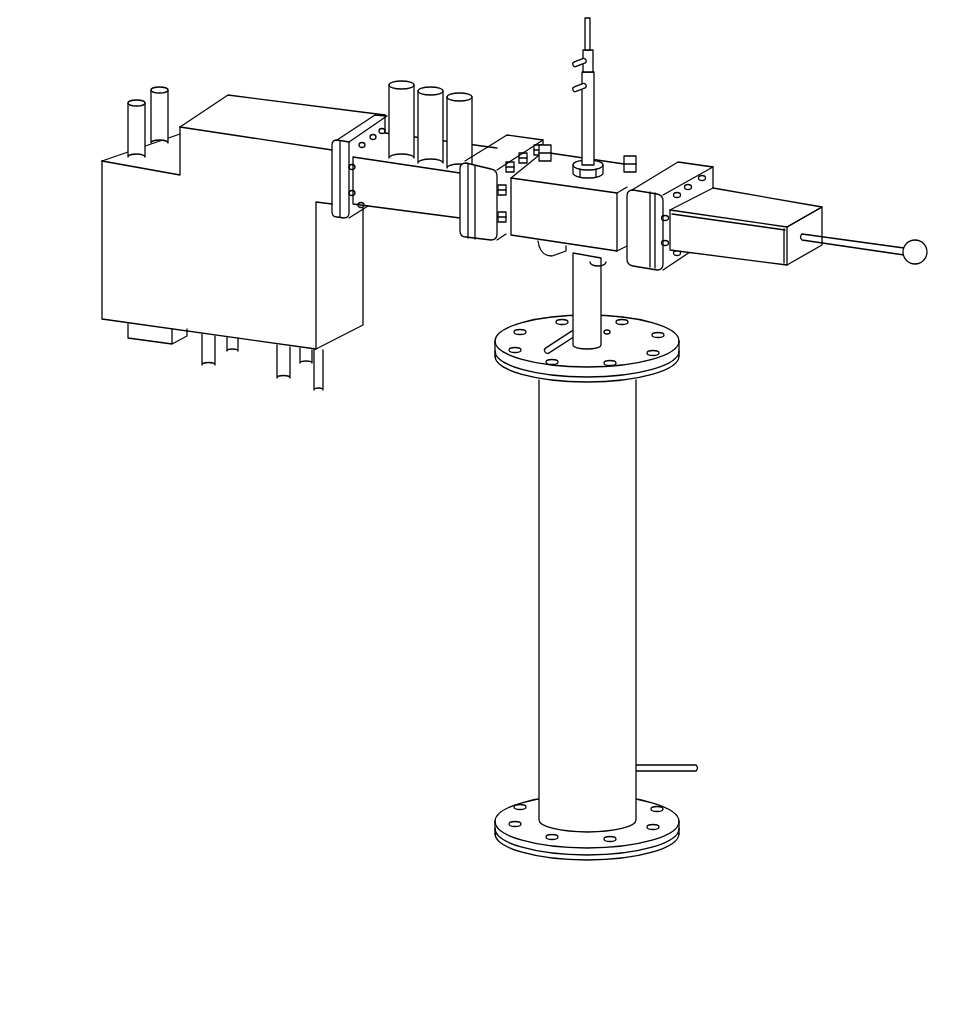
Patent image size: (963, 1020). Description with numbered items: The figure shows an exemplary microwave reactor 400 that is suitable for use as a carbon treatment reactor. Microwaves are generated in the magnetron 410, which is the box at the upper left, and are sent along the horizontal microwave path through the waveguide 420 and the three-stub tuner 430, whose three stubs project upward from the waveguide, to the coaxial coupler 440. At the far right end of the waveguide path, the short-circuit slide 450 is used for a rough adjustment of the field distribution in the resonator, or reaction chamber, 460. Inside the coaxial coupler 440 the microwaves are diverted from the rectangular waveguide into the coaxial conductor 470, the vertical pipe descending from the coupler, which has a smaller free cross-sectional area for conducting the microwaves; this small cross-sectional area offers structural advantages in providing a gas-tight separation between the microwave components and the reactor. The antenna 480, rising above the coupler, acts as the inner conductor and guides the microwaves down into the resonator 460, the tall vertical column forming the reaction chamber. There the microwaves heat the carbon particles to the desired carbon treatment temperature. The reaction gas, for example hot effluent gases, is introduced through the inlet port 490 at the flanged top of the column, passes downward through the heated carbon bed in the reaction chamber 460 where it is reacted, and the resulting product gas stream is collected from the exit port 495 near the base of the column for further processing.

The microwave reactor 400 is at (337, 512).
The magnetron 410 is at (100, 221).
The waveguide 420 is at (290, 102).
The 3-Stub tuner 430 is at (433, 83).
The coaxial coupler 440 is at (613, 157).
The short-circuit slide 450 is at (782, 199).
The resonator (reaction chamber) 460 is at (668, 609).
The coaxial conductor 470 is at (601, 294).
The antenna 480 is at (598, 86).
The inlet port 490 is at (556, 343).
The exit port 495 is at (672, 766).